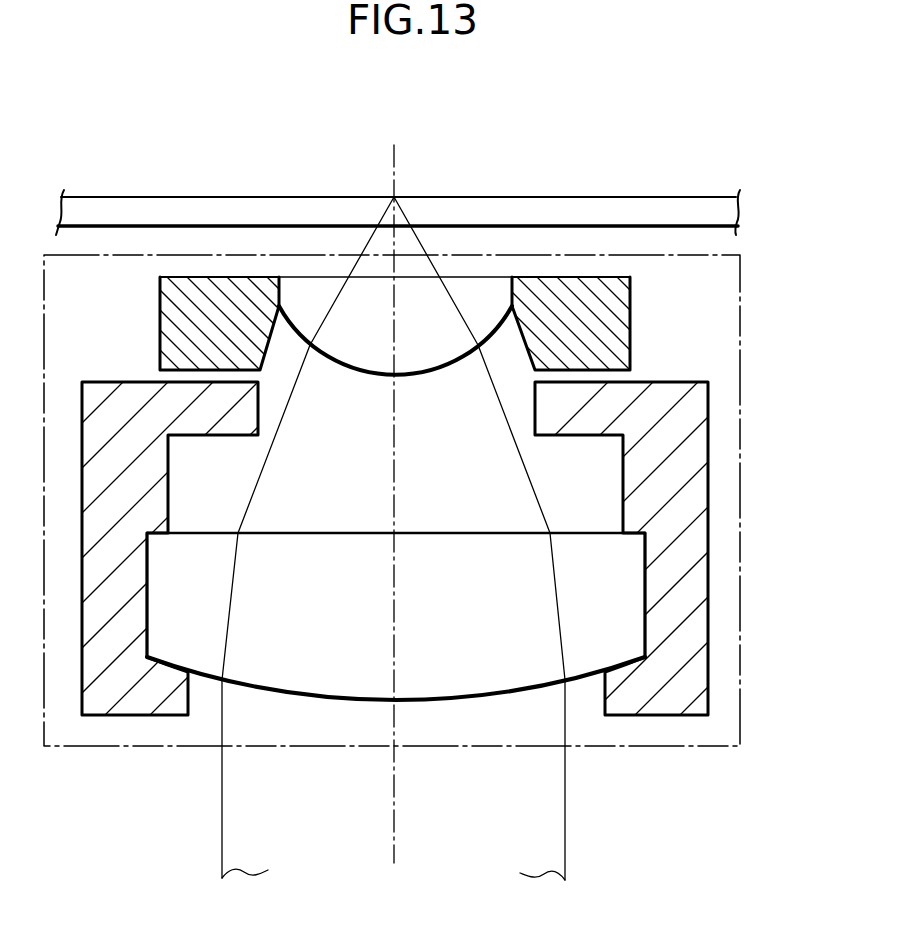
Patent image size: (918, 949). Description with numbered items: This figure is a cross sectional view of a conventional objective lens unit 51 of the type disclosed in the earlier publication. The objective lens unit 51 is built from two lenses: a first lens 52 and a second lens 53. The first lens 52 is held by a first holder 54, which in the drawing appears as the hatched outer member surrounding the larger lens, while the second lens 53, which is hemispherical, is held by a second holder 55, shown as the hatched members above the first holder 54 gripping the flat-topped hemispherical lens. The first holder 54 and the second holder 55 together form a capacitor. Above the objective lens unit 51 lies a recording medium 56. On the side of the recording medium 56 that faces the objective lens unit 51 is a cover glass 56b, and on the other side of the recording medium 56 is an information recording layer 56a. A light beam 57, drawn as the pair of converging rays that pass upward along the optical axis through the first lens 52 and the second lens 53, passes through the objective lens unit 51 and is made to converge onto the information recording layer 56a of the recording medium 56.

The objective lens unit 51 is at (665, 746).
The first lens 52 is at (477, 682).
The second lens 53 is at (483, 285).
The first holder 54 is at (695, 693).
The second holder 55 is at (630, 357).
The recording medium 56 is at (431, 233).
The information recording layer 56a is at (568, 197).
The cover glass 56b is at (673, 227).
The light beam 57 is at (565, 805).